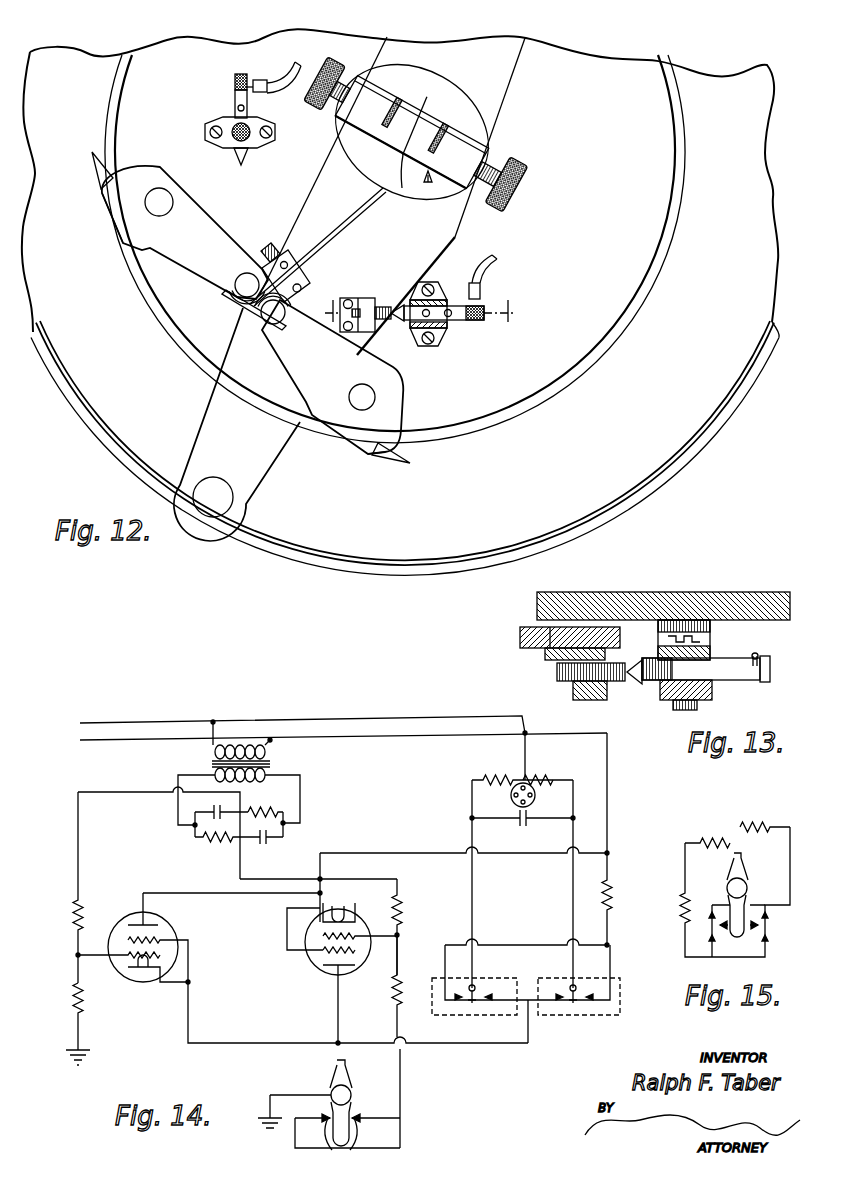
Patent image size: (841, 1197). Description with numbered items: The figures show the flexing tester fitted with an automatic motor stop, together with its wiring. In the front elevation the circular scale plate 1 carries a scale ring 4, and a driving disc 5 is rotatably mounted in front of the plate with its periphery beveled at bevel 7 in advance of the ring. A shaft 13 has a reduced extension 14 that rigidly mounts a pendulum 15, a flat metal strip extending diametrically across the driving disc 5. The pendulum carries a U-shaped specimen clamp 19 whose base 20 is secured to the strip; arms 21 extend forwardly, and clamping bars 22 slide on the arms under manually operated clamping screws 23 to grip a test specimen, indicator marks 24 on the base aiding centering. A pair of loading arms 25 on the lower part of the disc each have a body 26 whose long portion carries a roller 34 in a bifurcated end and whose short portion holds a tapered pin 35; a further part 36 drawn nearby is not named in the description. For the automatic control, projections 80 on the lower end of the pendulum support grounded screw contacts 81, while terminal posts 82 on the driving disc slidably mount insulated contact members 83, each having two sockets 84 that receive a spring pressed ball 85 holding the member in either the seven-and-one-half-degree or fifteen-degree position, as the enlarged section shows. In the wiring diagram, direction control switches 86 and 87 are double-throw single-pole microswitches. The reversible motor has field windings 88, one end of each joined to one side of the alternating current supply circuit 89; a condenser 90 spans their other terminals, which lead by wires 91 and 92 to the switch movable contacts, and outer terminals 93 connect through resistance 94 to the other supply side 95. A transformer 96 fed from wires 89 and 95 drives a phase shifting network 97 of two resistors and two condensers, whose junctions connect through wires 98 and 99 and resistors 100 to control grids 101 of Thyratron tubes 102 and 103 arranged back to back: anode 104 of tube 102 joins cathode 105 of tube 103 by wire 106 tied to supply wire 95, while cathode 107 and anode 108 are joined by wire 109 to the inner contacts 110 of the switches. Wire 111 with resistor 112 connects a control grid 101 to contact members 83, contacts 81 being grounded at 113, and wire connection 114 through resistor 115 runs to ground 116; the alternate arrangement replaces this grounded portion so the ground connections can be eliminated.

In FIG. 12, the scale plate 1 is at (710, 430).
In FIG. 12, the scale ring 4 is at (660, 478).
In FIG. 12, the driving disc 5 is at (622, 322).
In FIG. 13, the driving disc 5 is at (640, 595).
In FIG. 12, the bevel portion 7 is at (520, 412).
In FIG. 12, the shaft 13 is at (420, 303).
In FIG. 12, the reduced extension 14 is at (403, 186).
In FIG. 12, the pendulum 15 is at (215, 405).
In FIG. 13, the pendulum 15 is at (530, 627).
In FIG. 14, the pendulum 15 is at (346, 1076).
In FIG. 15, the pendulum 15 is at (730, 870).
In FIG. 12, the specimen clamp 19 is at (425, 186).
In FIG. 12, the base 20 is at (470, 128).
In FIG. 12, the arms 21 is at (352, 112).
In FIG. 12, the clamping bars 22 is at (406, 112).
In FIG. 12, the clamping screws 23 is at (312, 100).
In FIG. 12, the indicator marks 24 is at (433, 100).
In FIG. 12, the loading arms 25 is at (105, 200).
In FIG. 12, the body 26 is at (218, 224).
In FIG. 12, the roller 34 is at (238, 296).
In FIG. 12, the pin 35 is at (100, 170).
In FIG. 12, the guide bar 36 is at (240, 318).
In FIG. 12, the projections 80 is at (360, 300).
In FIG. 13, the projections 80 is at (600, 700).
In FIG. 12, the contacts 81 is at (388, 305).
In FIG. 13, the contacts 81 is at (560, 682).
In FIG. 14, the contacts 81 is at (338, 1152).
In FIG. 12, the terminal posts 82 is at (222, 143).
In FIG. 13, the terminal posts 82 is at (712, 637).
In FIG. 12, the contact members 83 is at (249, 100).
In FIG. 13, the contact members 83 is at (650, 686).
In FIG. 14, the contact members 83 is at (318, 1118).
In FIG. 12, the sockets 84 is at (234, 94).
In FIG. 13, the sockets 84 is at (722, 690).
In FIG. 13, the spring pressed ball 85 is at (648, 660).
In FIG. 14, the direction control switch 86 is at (512, 1018).
In FIG. 14, the direction control switch 87 is at (572, 1018).
In FIG. 14, the field windings 88 is at (502, 781).
In FIG. 14, the alternating current supply circuit 89 is at (372, 720).
In FIG. 14, the condenser 90 is at (530, 824).
In FIG. 14, the wire 91 is at (470, 836).
In FIG. 14, the wire 92 is at (577, 828).
In FIG. 14, the outer terminals 93 is at (458, 1004).
In FIG. 14, the resistance 94 is at (613, 893).
In FIG. 14, the alternating current supply circuit 95 is at (434, 730).
In FIG. 14, the transformer 96 is at (278, 762).
In FIG. 14, the phase shifting network 97 is at (193, 828).
In FIG. 14, the wire 98 is at (133, 797).
In FIG. 14, the wire 99 is at (290, 881).
In FIG. 14, the resistors 100 is at (73, 906).
In FIG. 14, the control grids 101 is at (168, 955).
In FIG. 15, the control grids 101 is at (714, 838).
In FIG. 14, the Thyratron control tube 102 is at (172, 920).
In FIG. 14, the Thyratron control tube 103 is at (310, 970).
In FIG. 14, the anode 104 is at (134, 918).
In FIG. 14, the cathode 105 is at (346, 910).
In FIG. 14, the wire 106 is at (394, 858).
In FIG. 14, the cathode 107 is at (133, 975).
In FIG. 14, the anode 108 is at (348, 970).
In FIG. 14, the wire 109 is at (292, 1043).
In FIG. 14, the inner contacts 110 is at (478, 990).
In FIG. 14, the wire 111 is at (401, 1085).
In FIG. 14, the resistor 112 is at (404, 982).
In FIG. 14, the ground 113 is at (270, 1118).
In FIG. 14, the wire connection 114 is at (76, 968).
In FIG. 14, the resistor 115 is at (76, 998).
In FIG. 14, the ground 116 is at (76, 1050).